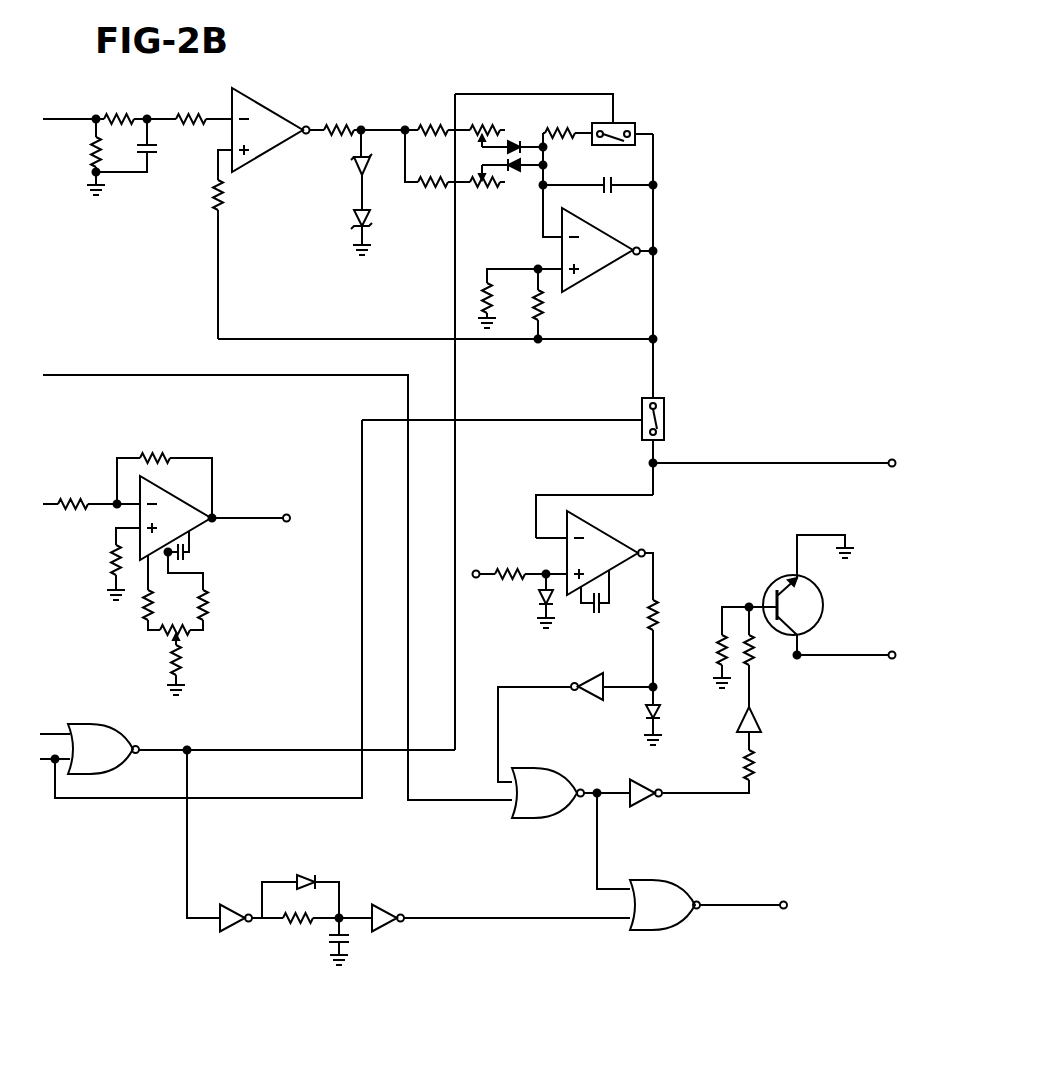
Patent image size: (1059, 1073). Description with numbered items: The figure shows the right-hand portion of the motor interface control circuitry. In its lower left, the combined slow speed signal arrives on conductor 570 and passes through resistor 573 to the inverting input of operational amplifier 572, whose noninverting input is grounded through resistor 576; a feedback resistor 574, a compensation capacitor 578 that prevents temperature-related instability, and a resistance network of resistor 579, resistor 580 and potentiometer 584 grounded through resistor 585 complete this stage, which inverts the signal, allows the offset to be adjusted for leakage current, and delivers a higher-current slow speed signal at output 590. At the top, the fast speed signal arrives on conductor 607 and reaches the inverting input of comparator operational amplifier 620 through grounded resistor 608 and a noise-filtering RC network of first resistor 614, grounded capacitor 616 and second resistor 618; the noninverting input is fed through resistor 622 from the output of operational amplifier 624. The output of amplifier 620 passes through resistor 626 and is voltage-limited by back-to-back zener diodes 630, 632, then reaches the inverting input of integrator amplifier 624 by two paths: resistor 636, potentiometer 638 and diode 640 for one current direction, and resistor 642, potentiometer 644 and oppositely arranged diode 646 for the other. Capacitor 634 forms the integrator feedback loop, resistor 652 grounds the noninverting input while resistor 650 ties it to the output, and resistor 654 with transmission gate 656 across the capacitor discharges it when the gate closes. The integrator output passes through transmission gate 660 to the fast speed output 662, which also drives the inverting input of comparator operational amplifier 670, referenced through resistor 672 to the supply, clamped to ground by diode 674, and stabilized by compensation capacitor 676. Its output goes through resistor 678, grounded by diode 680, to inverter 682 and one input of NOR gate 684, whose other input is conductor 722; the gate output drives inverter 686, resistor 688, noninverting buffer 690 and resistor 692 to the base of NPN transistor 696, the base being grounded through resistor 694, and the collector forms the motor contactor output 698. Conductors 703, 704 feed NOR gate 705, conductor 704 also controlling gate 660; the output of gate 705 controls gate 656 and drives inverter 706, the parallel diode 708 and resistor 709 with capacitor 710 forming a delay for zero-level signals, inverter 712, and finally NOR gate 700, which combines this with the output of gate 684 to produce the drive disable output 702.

The conductor 607 is at (70, 117).
The grounded resistor 608 is at (92, 148).
The first resistor 614 is at (132, 111).
The grounded capacitor 616 is at (157, 152).
The second resistor 618 is at (192, 111).
The operational amplifier 620 is at (259, 104).
The resistor 622 is at (221, 192).
The operational amplifier 624 is at (591, 275).
The resistor 626 is at (342, 128).
The zener diode 630 is at (350, 166).
The zener diode 632 is at (350, 220).
The capacitor 634 is at (607, 197).
The resistor 636 is at (433, 126).
The potentiometer 638 is at (490, 120).
The diode 640 is at (515, 140).
The resistor 642 is at (434, 187).
The potentiometer 644 is at (485, 189).
The diode 646 is at (512, 178).
The resistor 650 is at (541, 316).
The resistor 652 is at (489, 290).
The resistor 654 is at (552, 133).
The transmission gate 656 is at (621, 123).
The transmission gate 660 is at (664, 420).
The fast speed output 662 is at (890, 466).
The conductor 722 is at (100, 372).
The conductor 570 is at (50, 506).
The operational amplifier 572 is at (196, 487).
The resistor 573 is at (78, 501).
The feedback resistor 574 is at (167, 454).
The resistor 576 is at (110, 557).
The compensation capacitor 578 is at (194, 560).
The resistor 579 is at (147, 610).
The resistor 580 is at (211, 605).
The potentiometer 584 is at (183, 636).
The resistor 585 is at (172, 658).
The output 590 is at (285, 516).
The conductor 703 is at (50, 733).
The conductor 704 is at (46, 764).
The NOR gate 705 is at (111, 728).
The operational amplifier 670 is at (599, 532).
The resistor 672 is at (508, 568).
The diode 674 is at (539, 605).
The compensation capacitor 676 is at (592, 614).
The resistor 678 is at (660, 614).
The diode 680 is at (645, 720).
The inverter 682 is at (583, 682).
The NOR gate 684 is at (531, 818).
The inverter 686 is at (646, 806).
The resistor 688 is at (753, 767).
The noninverting buffer 690 is at (764, 730).
The resistor 692 is at (755, 661).
The resistor 694 is at (719, 650).
The NPN transistor 696 is at (774, 582).
The motor contactor output 698 is at (893, 660).
The NOR gate 700 is at (660, 882).
The drive disable output 702 is at (801, 880).
The inverter 706 is at (240, 886).
The diode 708 is at (320, 858).
The resistor 709 is at (293, 924).
The capacitor 710 is at (350, 934).
The inverter 712 is at (389, 903).